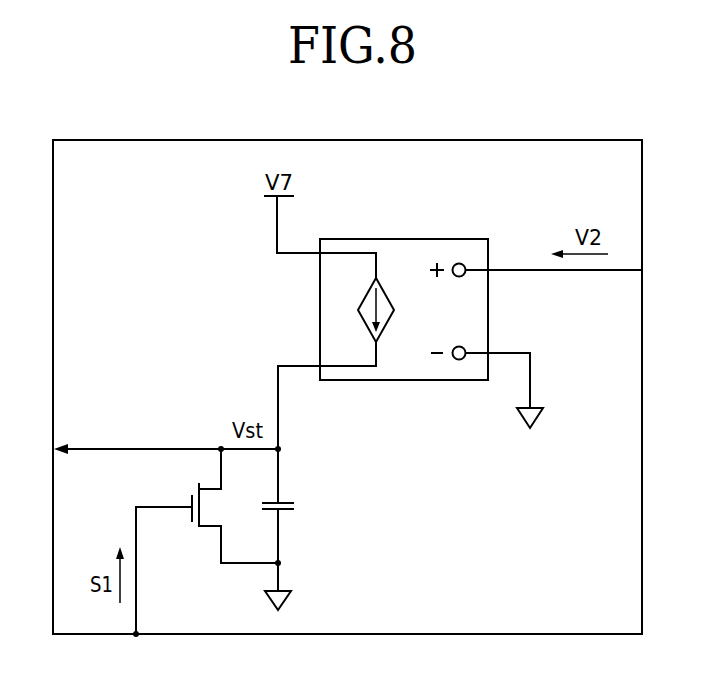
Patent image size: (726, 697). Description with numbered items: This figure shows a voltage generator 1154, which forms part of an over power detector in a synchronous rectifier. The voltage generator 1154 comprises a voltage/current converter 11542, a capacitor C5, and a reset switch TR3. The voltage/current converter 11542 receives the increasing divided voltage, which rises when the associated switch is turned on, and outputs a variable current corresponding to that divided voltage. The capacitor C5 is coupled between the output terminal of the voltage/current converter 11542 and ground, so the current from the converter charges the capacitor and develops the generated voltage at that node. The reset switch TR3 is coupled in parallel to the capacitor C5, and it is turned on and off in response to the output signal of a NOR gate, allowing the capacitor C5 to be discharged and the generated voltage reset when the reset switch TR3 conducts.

The Vst voltage generator 1154 is at (347, 363).
The voltage/current converter 11542 is at (459, 316).
The reset switch TR3 is at (207, 543).
The capacitor C5 is at (292, 529).